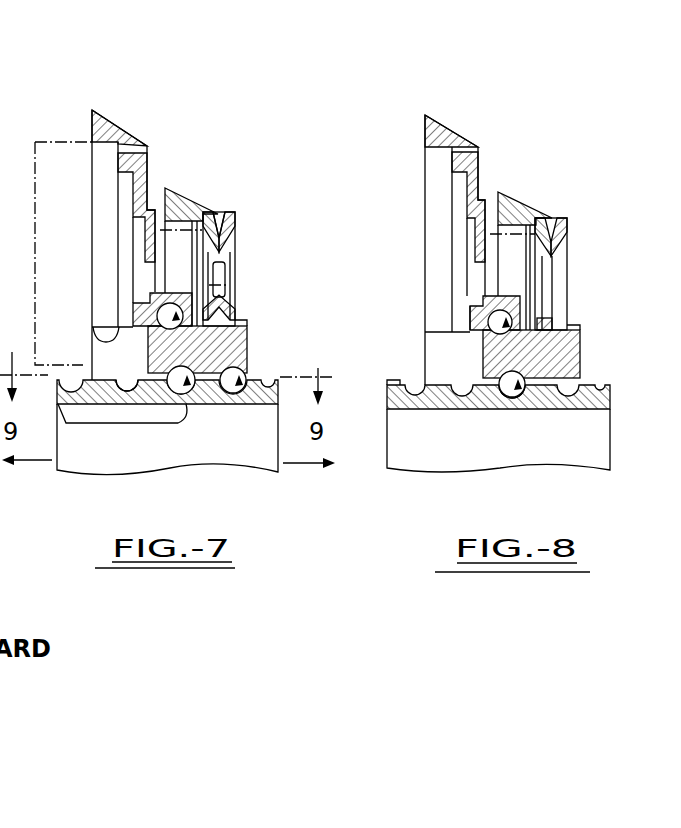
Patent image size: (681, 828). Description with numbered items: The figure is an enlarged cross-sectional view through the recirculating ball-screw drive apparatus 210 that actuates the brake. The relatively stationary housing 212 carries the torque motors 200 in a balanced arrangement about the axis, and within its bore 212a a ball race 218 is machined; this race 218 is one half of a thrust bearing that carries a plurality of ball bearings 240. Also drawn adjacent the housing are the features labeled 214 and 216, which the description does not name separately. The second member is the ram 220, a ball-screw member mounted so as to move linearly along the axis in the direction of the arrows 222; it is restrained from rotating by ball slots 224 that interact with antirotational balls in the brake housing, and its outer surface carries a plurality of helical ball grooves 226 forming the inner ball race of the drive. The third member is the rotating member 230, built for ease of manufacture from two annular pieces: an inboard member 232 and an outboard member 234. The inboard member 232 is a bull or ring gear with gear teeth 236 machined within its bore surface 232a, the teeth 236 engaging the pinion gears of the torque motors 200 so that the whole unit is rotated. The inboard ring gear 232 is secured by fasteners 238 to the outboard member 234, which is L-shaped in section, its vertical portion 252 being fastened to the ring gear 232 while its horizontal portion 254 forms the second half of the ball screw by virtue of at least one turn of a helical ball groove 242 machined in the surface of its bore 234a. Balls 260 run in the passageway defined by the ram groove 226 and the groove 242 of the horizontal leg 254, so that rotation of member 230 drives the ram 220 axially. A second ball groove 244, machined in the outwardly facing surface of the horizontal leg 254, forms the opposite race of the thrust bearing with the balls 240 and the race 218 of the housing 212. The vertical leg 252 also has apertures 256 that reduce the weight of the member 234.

In FIG. 7, the torque motor 200 is at (70, 142).
In FIG. 7, the ball-screw drive apparatus 210 is at (138, 100).
In FIG. 8, the ball-screw drive apparatus 210 is at (457, 110).
In FIG. 7, the housing 212 is at (137, 125).
In FIG. 8, the housing 212 is at (475, 135).
In FIG. 7, the bore 212a is at (92, 333).
In FIG. 7, the body 214 is at (100, 142).
In FIG. 8, the body 214 is at (452, 148).
In FIG. 7, the sleeve insert 216 is at (153, 150).
In FIG. 8, the sleeve insert 216 is at (468, 224).
In FIG. 7, the ball race 218 is at (152, 305).
In FIG. 8, the ball race 218 is at (497, 315).
In FIG. 7, the ram 220 is at (276, 480).
In FIG. 8, the ram 220 is at (615, 458).
In FIG. 7, the arrows 222 is at (35, 463).
In FIG. 7, the ball slot 224 is at (122, 408).
In FIG. 7, the helical ball groove 226 is at (131, 382).
In FIG. 8, the helical ball groove 226 is at (390, 387).
In FIG. 7, the rotating member 230 is at (220, 208).
In FIG. 8, the rotating member 230 is at (550, 212).
In FIG. 7, the inboard member 232 is at (190, 235).
In FIG. 8, the inboard member 232 is at (508, 210).
In FIG. 7, the bore surface 232a is at (230, 244).
In FIG. 7, the outboard member 234 is at (232, 227).
In FIG. 8, the outboard member 234 is at (566, 238).
In FIG. 7, the bore 234a is at (210, 393).
In FIG. 8, the bore 234a is at (582, 378).
In FIG. 7, the gear teeth 236 is at (192, 240).
In FIG. 8, the gear teeth 236 is at (517, 234).
In FIG. 7, the fastener 238 is at (227, 287).
In FIG. 7, the ball bearing 240 is at (158, 308).
In FIG. 8, the ball bearing 240 is at (498, 333).
In FIG. 8, the helical ball groove 242 is at (514, 380).
In FIG. 8, the second ball groove 244 is at (494, 320).
In FIG. 7, the vertical portion 252 is at (228, 317).
In FIG. 8, the vertical portion 252 is at (568, 270).
In FIG. 7, the horizontal portion 254 is at (213, 360).
In FIG. 8, the horizontal portion 254 is at (573, 348).
In FIG. 8, the aperture 256 is at (566, 306).
In FIG. 7, the ball 260 is at (173, 370).
In FIG. 8, the ball 260 is at (512, 398).